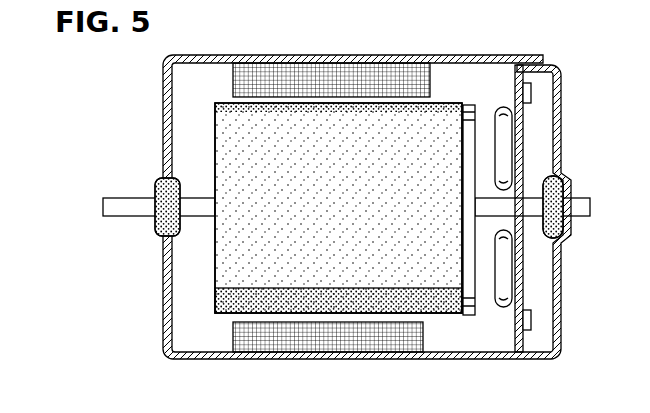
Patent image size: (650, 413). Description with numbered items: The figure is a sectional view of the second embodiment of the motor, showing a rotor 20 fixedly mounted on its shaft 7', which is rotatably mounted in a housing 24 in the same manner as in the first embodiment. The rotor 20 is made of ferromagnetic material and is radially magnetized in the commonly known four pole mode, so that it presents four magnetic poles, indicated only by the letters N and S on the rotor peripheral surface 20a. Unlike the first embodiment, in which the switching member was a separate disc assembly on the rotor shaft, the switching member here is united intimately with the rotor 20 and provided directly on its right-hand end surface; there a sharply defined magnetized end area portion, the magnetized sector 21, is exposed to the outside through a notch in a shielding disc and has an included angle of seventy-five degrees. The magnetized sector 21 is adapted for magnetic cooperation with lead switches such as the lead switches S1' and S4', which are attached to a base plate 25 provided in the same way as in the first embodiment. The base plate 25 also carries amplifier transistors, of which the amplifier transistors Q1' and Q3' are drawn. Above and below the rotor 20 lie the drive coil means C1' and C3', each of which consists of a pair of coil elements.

The housing 24 is at (441, 62).
The base plate 25 is at (524, 167).
The shaft 7' is at (346, 184).
The drive coil means C1' is at (331, 57).
The drive coil means C3' is at (328, 360).
The rotor 20 is at (206, 281).
The rotor peripheral surface 20a is at (253, 270).
The magnetized sector 21 is at (468, 160).
The lead switch S1' is at (545, 148).
The lead switch S4' is at (544, 268).
The amplifier transistor Q1' is at (557, 86).
The amplifier transistor Q3' is at (557, 324).